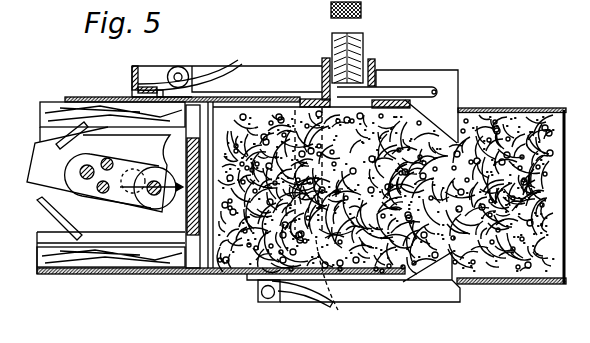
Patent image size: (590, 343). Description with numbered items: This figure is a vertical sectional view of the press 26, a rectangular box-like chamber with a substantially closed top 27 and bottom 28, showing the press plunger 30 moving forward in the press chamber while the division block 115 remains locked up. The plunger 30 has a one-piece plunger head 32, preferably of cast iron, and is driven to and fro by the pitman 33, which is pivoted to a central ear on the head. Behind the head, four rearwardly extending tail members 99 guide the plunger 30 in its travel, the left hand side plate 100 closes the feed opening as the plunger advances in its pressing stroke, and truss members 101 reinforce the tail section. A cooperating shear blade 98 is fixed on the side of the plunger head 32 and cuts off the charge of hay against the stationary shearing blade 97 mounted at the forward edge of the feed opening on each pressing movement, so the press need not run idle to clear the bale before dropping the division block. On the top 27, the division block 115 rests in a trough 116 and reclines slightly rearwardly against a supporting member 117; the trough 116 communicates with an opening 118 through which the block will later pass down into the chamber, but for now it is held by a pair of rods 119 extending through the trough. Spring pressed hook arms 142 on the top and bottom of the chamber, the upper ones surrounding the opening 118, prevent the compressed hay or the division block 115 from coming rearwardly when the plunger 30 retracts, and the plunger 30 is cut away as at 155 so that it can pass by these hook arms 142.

The press 26 is at (566, 90).
The top 27 is at (520, 108).
The bottom 28 is at (532, 284).
The press plunger 30 is at (165, 149).
The plunger head 32 is at (186, 220).
The pitman 33 is at (60, 170).
The stationary shearing blade 97 is at (315, 283).
The cooperating shear blade 98 is at (206, 268).
The tail members 99 is at (60, 103).
The left hand side plate 100 is at (124, 233).
The truss members 101 is at (66, 181).
The division block 115 is at (362, 53).
The trough 116 is at (375, 64).
The supporting member 117 is at (327, 58).
The opening 118 is at (335, 105).
The rods 119 is at (394, 80).
The spring pressed hook arms 142 is at (436, 76).
The cut away 155 is at (197, 118).